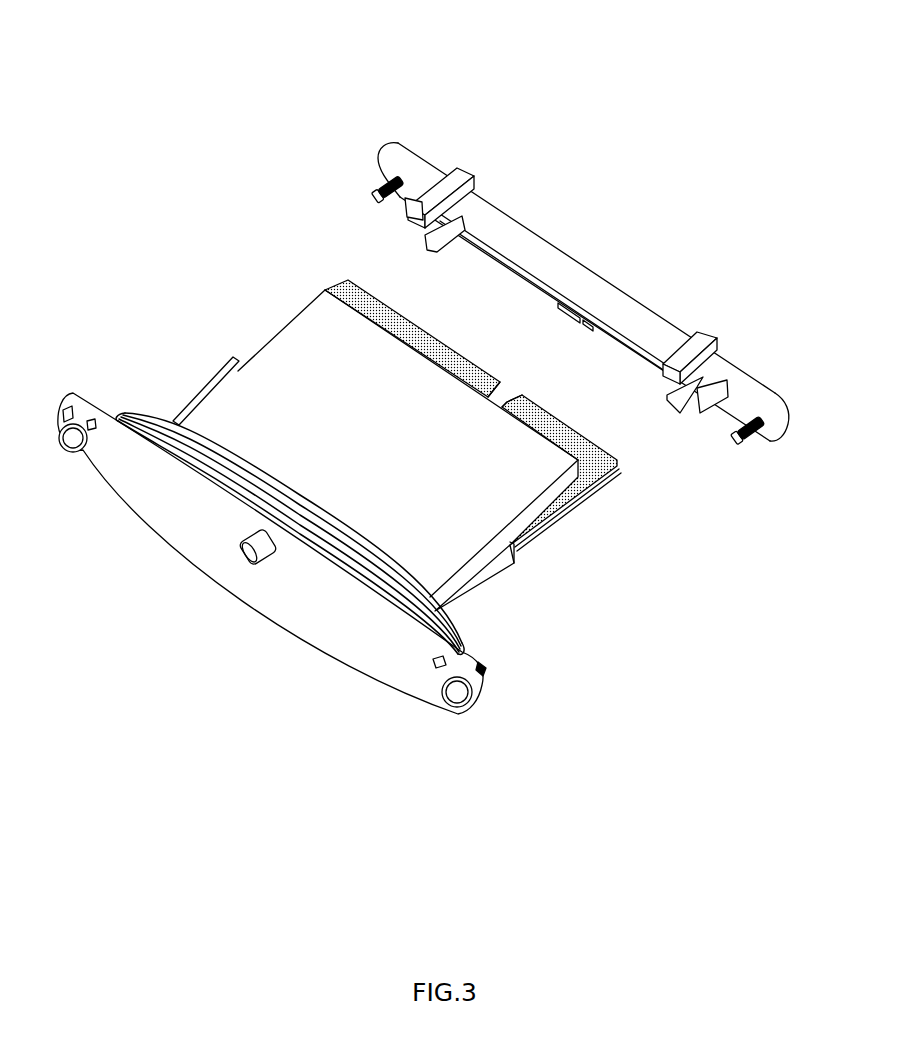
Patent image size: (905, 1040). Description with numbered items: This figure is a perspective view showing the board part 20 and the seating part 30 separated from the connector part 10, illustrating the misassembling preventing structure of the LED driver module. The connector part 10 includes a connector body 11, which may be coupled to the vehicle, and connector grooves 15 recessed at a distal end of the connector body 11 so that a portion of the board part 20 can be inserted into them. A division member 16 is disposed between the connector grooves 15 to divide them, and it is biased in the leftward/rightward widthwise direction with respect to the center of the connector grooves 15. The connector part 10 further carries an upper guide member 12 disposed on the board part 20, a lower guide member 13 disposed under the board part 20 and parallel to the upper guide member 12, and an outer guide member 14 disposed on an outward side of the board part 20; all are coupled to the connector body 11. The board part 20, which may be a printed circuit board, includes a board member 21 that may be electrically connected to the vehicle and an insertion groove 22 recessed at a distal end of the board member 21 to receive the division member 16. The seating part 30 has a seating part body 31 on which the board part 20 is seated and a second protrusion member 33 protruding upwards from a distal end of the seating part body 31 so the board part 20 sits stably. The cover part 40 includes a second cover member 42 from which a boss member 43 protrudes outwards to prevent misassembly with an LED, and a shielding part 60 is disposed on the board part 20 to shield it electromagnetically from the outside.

The connector part 10 is at (665, 323).
The connector body 11 is at (617, 287).
The upper guide member 12 is at (457, 182).
The lower guide member 13 is at (433, 238).
The outer guide member 14 is at (422, 192).
The connector grooves 15 is at (558, 306).
The division member 16 is at (582, 325).
The board part 20 is at (592, 441).
The board member 21 is at (545, 460).
The insertion groove 22 is at (505, 402).
The seating part 30 is at (616, 469).
The seating part body 31 is at (527, 550).
The second protrusion member 33 is at (483, 583).
The cover part 40 is at (253, 571).
The second cover member 42 is at (197, 537).
The boss member 43 is at (430, 663).
The shielding part 60 is at (585, 448).